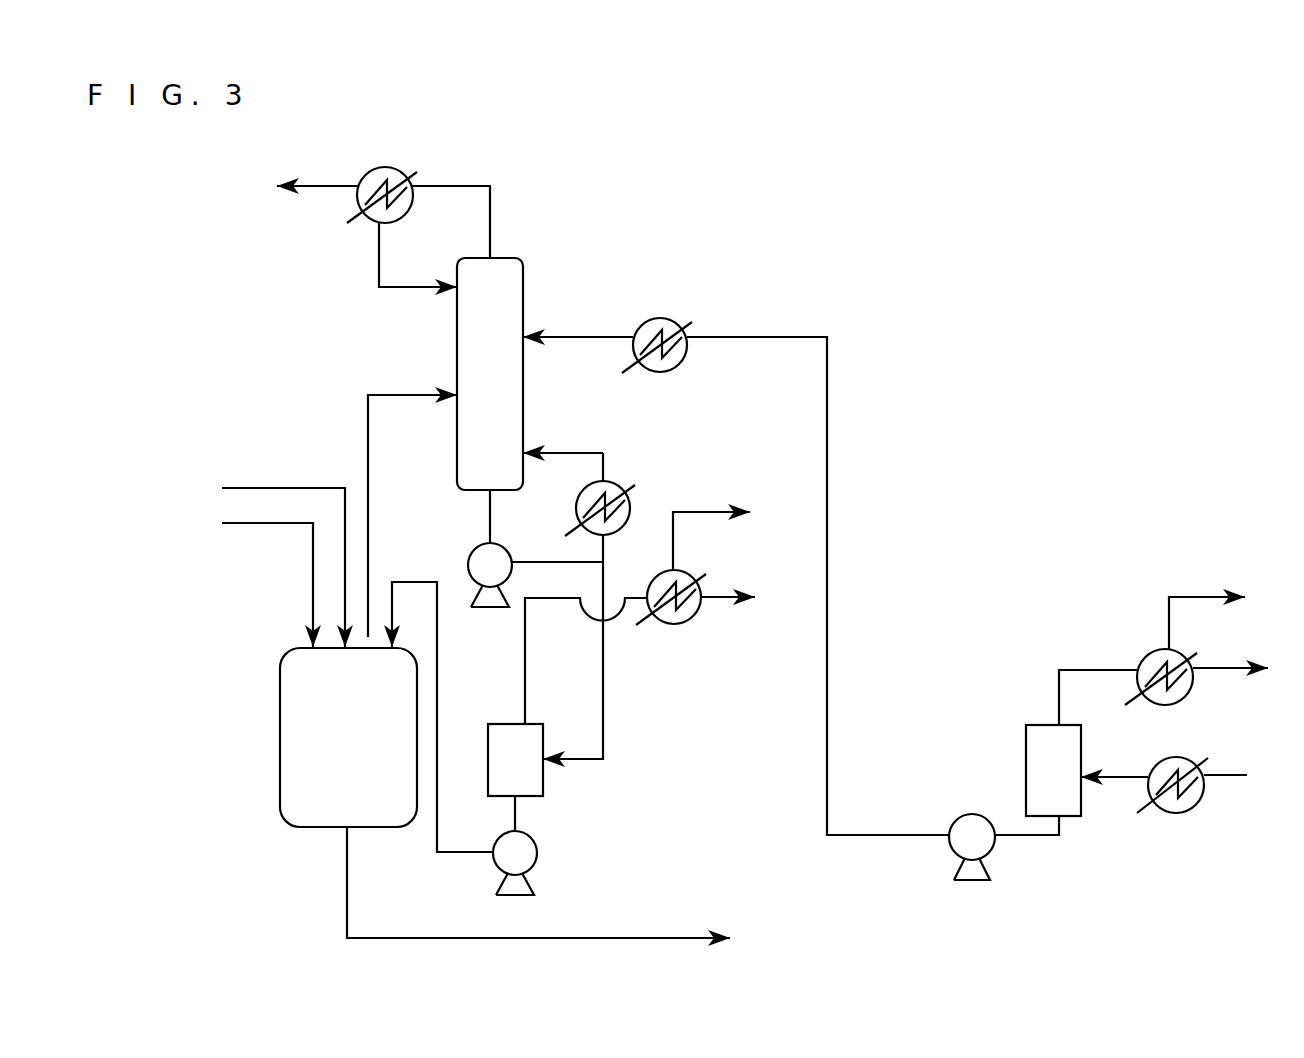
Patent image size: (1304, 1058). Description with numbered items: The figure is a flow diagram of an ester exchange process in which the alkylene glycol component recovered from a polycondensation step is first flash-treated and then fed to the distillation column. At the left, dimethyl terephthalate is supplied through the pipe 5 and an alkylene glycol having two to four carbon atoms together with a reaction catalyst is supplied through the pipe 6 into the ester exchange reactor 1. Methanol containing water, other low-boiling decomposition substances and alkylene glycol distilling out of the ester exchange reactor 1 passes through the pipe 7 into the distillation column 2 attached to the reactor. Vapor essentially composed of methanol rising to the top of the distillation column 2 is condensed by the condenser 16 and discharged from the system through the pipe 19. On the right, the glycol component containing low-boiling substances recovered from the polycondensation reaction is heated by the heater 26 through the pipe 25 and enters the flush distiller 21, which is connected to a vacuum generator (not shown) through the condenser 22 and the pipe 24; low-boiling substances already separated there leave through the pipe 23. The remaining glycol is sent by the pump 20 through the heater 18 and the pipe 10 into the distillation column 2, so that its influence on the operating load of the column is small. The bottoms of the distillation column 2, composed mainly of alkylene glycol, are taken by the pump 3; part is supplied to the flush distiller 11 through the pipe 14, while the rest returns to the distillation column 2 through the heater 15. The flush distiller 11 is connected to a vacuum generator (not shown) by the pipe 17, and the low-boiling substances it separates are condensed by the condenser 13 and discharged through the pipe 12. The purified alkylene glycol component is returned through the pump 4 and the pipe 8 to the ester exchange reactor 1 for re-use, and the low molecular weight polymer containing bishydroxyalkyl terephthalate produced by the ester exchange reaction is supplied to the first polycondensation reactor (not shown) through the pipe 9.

The ester exchange reactor 1 is at (280, 720).
The distillation column 2 is at (457, 342).
The pump 3 is at (470, 570).
The pump 4 is at (537, 860).
The pipe 5 is at (287, 487).
The pipe 6 is at (292, 522).
The pipe 7 is at (365, 472).
The pipe 8 is at (437, 828).
The pipe 9 is at (667, 930).
The pipe 10 is at (570, 335).
The flush distiller 11 is at (543, 782).
The pipe 12 is at (723, 590).
The condenser 13 is at (675, 625).
The pipe 14 is at (525, 623).
The heater 15 is at (620, 485).
The condenser 16 is at (362, 217).
The pipe 17 is at (713, 510).
The heater 18 is at (678, 312).
The pipe 19 is at (332, 185).
The pump 20 is at (950, 842).
The flush distiller 21 is at (1025, 793).
The condenser 22 is at (1143, 665).
The pipe 23 is at (1200, 595).
The pipe 24 is at (1217, 670).
The pipe 25 is at (1213, 780).
The heater 26 is at (1157, 810).